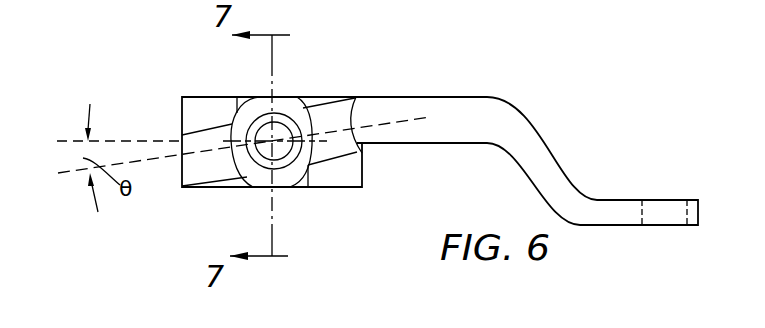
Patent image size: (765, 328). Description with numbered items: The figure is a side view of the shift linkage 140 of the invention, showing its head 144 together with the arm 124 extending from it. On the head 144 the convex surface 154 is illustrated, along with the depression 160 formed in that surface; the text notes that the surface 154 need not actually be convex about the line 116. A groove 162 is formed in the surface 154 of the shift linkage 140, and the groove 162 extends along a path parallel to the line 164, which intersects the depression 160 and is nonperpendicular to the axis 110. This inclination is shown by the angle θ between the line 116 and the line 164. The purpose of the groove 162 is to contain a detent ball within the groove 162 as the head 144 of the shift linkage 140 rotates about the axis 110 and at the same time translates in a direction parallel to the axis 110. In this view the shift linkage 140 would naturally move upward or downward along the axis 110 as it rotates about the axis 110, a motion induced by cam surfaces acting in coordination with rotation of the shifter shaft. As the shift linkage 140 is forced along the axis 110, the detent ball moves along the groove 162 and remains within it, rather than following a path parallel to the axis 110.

The axis 110 is at (272, 112).
The line 116 is at (127, 142).
The arm 124 is at (537, 147).
The shift linkage 140 is at (168, 247).
The head 144 is at (195, 103).
The convex surface 154 is at (345, 178).
The depression 160 is at (282, 118).
The groove 162 is at (203, 172).
The line 164 is at (150, 162).